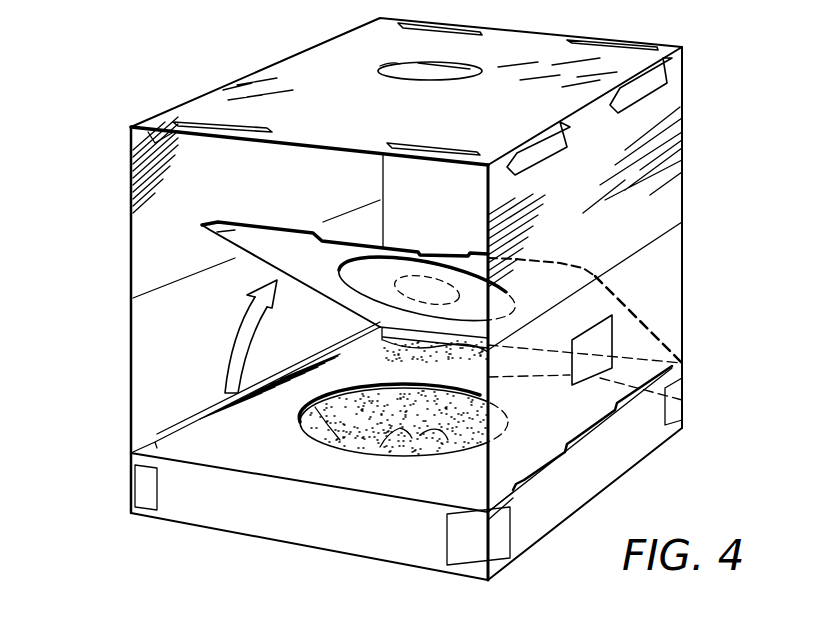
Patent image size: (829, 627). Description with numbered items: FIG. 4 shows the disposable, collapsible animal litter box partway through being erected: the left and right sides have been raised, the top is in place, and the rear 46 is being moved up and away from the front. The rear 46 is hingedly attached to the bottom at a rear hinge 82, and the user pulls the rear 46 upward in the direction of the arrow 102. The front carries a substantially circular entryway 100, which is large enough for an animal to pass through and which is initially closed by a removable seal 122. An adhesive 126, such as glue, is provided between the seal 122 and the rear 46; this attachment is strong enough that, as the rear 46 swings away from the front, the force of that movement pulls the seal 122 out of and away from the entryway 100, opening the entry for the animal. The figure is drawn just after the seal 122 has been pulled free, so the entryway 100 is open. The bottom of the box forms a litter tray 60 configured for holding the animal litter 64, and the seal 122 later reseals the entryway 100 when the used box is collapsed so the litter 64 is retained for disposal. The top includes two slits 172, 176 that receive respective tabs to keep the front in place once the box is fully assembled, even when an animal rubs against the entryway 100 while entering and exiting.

The slit 172 is at (221, 128).
The slit 176 is at (428, 148).
The rear 46 is at (230, 234).
The arrow 102 is at (235, 340).
The entryway 100 is at (303, 442).
The litter tray 60 is at (380, 447).
The animal litter 64 is at (420, 435).
The removable seal 122 is at (372, 267).
The adhesive 126 is at (436, 296).
The rear hinge 82 is at (638, 362).